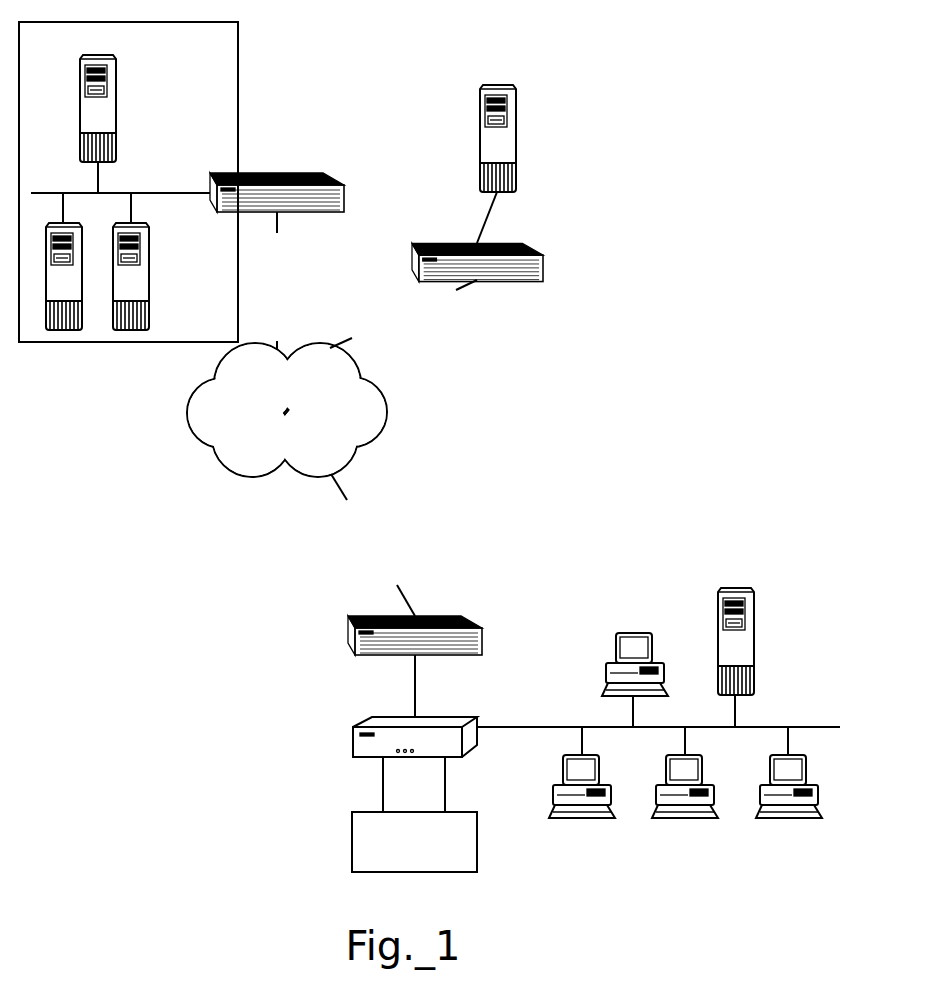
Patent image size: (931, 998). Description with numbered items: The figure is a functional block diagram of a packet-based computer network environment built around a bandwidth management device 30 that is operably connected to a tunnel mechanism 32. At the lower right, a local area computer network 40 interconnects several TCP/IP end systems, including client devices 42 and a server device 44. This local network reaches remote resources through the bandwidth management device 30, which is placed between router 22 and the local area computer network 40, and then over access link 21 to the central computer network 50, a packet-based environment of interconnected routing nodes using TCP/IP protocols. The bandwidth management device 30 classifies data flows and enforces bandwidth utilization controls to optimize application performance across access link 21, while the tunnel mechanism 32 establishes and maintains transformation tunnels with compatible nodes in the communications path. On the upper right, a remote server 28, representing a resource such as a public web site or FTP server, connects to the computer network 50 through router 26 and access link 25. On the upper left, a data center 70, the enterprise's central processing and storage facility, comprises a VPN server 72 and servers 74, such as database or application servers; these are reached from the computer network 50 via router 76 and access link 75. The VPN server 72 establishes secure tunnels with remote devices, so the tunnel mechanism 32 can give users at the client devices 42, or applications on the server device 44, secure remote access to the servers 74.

The access link 21 is at (397, 580).
The router 22 is at (447, 615).
The access link 25 is at (472, 283).
The router 26 is at (507, 283).
The server 28 is at (517, 138).
The bandwidth management device 30 is at (445, 713).
The tunnel mechanism 32 is at (352, 842).
The local area computer network 40 is at (840, 727).
The client devices 42 is at (632, 633).
The server device 44 is at (742, 588).
The computer network 50 is at (240, 470).
The data center 70 is at (238, 101).
The VPN server 72 is at (116, 107).
The servers 74 is at (63, 325).
The access link 75 is at (270, 220).
The router 76 is at (308, 213).